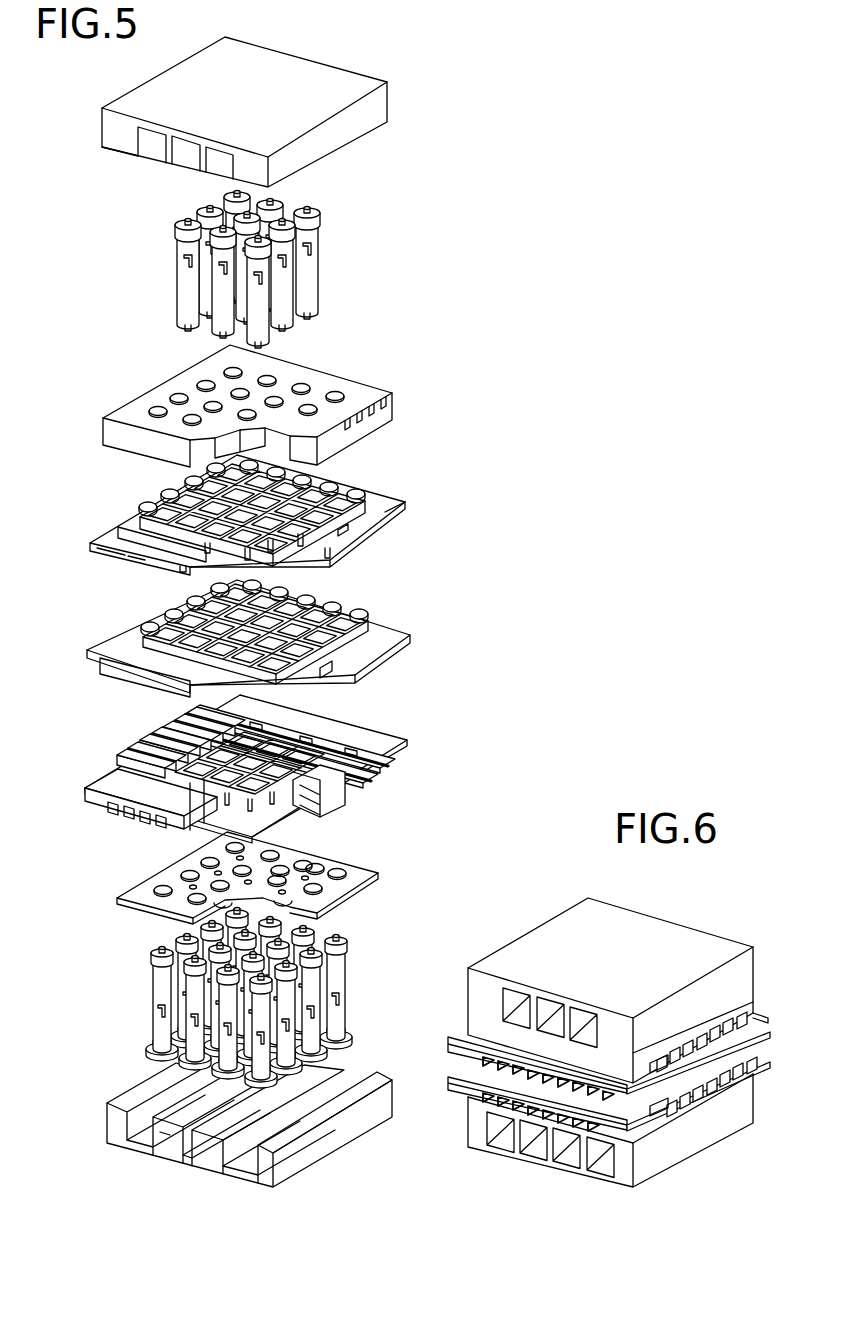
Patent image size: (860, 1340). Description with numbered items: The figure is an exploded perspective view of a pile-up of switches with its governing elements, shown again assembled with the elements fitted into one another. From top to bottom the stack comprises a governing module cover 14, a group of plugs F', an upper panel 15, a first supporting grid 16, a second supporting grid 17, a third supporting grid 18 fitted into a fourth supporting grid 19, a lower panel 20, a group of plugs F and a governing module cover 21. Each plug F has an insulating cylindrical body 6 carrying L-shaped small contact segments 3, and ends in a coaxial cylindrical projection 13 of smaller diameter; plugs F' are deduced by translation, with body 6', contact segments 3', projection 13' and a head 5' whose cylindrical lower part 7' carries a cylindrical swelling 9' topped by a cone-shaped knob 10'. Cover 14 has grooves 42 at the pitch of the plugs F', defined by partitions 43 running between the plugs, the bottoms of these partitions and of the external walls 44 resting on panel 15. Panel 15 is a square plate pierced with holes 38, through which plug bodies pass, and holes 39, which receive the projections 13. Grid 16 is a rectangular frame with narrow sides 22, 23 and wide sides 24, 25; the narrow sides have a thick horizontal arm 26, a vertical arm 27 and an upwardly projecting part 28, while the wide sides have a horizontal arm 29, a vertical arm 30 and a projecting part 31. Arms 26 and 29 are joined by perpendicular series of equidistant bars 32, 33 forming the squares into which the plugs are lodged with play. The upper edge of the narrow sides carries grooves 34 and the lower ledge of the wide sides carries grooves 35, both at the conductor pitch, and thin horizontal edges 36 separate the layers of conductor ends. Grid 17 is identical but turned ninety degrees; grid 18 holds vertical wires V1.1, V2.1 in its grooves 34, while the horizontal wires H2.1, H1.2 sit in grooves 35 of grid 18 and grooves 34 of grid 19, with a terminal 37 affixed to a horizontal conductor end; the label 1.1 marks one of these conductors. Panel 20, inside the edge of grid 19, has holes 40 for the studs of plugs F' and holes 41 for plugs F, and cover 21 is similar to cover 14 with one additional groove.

In FIG. 5, the governing module cover 14 is at (470, 88).
In FIG. 6, the governing module cover 14 is at (669, 940).
In FIG. 5, the external walls 44 is at (109, 142).
In FIG. 5, the grooves 42 is at (150, 160).
In FIG. 5, the partitions 43 is at (169, 158).
In FIG. 5, the plugs F' is at (293, 261).
In FIG. 5, the knob or pion 10' is at (325, 247).
In FIG. 5, the cylindrical swelling 9' is at (325, 255).
In FIG. 5, the cylindrical lower part 7' is at (325, 263).
In FIG. 5, the head 5' is at (170, 280).
In FIG. 5, the body 6' is at (170, 282).
In FIG. 5, the small contact segments 3' is at (318, 263).
In FIG. 5, the cylindrical projection 13' is at (170, 282).
In FIG. 5, the upper panel 15 is at (287, 403).
In FIG. 6, the upper panel 15 is at (749, 997).
In FIG. 5, the holes 39 is at (235, 369).
In FIG. 5, the holes 38 is at (336, 393).
In FIG. 5, the first supporting grid 16 is at (280, 531).
In FIG. 6, the first supporting grid 16 is at (470, 1041).
In FIG. 5, the narrow side 23 is at (160, 498).
In FIG. 5, the wide side 25 is at (355, 494).
In FIG. 5, the upwardly projecting part 31 is at (128, 524).
In FIG. 5, the edges 36 is at (231, 576).
In FIG. 5, the narrow side 22 is at (390, 516).
In FIG. 5, the wide side 24 is at (118, 557).
In FIG. 5, the grooves 35 is at (136, 566).
In FIG. 5, the vertical arm 30 is at (186, 572).
In FIG. 5, the horizontal arm 29 is at (208, 553).
In FIG. 5, the bars 32 is at (249, 551).
In FIG. 5, the bars 33 is at (271, 549).
In FIG. 5, the horizontal arm 26 is at (301, 545).
In FIG. 5, the vertical arm 27 is at (330, 557).
In FIG. 5, the upwardly projecting part 28 is at (344, 535).
In FIG. 5, the grooves 34 is at (387, 520).
In FIG. 5, the second supporting grid 17 is at (490, 618).
In FIG. 6, the second supporting grid 17 is at (758, 1035).
In FIG. 5, the third supporting grid 18 is at (270, 793).
In FIG. 6, the third supporting grid 18 is at (470, 1079).
In FIG. 5, the fourth supporting grid 19 is at (279, 831).
In FIG. 6, the fourth supporting grid 19 is at (758, 1068).
In FIG. 5, the vertical wire V1.1 is at (396, 760).
In FIG. 5, the vertical wire V2.1 is at (404, 777).
In FIG. 5, the contact fin 1.1 is at (112, 800).
In FIG. 5, the terminal 37 is at (117, 825).
In FIG. 5, the horizontal wire H2.1 is at (142, 818).
In FIG. 5, the horizontal wire H1.2 is at (142, 831).
In FIG. 5, the lower panel 20 is at (303, 870).
In FIG. 5, the holes 40 is at (282, 868).
In FIG. 5, the holes 41 is at (340, 874).
In FIG. 5, the plugs F is at (289, 994).
In FIG. 5, the cylindrical projection 13 is at (346, 975).
In FIG. 5, the cylindrical body 6 is at (343, 992).
In FIG. 5, the small contact segments 3 is at (343, 992).
In FIG. 5, the governing module cover 21 is at (408, 1184).
In FIG. 6, the governing module cover 21 is at (748, 1103).